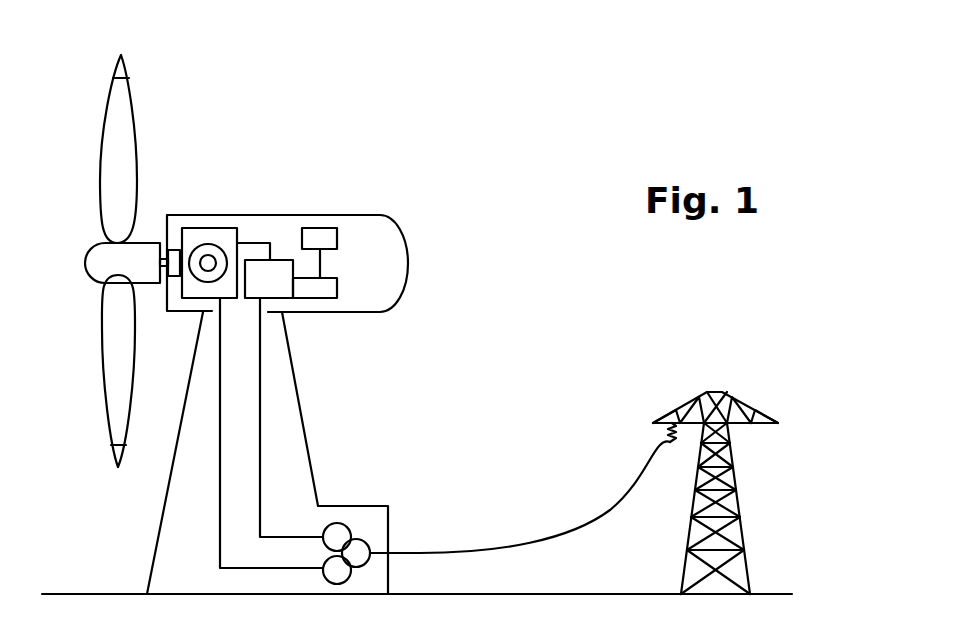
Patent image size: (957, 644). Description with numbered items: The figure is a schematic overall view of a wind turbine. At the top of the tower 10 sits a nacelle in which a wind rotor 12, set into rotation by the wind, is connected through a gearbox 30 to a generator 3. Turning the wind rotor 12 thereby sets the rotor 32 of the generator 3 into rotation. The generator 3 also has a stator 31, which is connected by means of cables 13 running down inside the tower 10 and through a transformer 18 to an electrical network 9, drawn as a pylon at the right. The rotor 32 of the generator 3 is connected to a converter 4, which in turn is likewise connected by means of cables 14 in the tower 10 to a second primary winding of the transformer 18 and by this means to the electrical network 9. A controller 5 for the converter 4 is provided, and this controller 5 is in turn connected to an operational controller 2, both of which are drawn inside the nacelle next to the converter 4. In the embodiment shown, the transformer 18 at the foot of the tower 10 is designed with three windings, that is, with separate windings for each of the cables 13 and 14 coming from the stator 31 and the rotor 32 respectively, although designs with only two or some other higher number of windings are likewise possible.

The wind rotor 12 is at (120, 93).
The gearbox 30 is at (177, 258).
The generator 3 is at (208, 228).
The stator 31 is at (203, 281).
The rotor 32 is at (215, 256).
The converter 4 is at (283, 265).
The operational controller 2 is at (325, 237).
The controller 5 is at (322, 290).
The tower 10 is at (310, 447).
The cables 13 is at (217, 508).
The cables 14 is at (258, 407).
The transformer 18 is at (353, 542).
The electrical network 9 is at (668, 430).